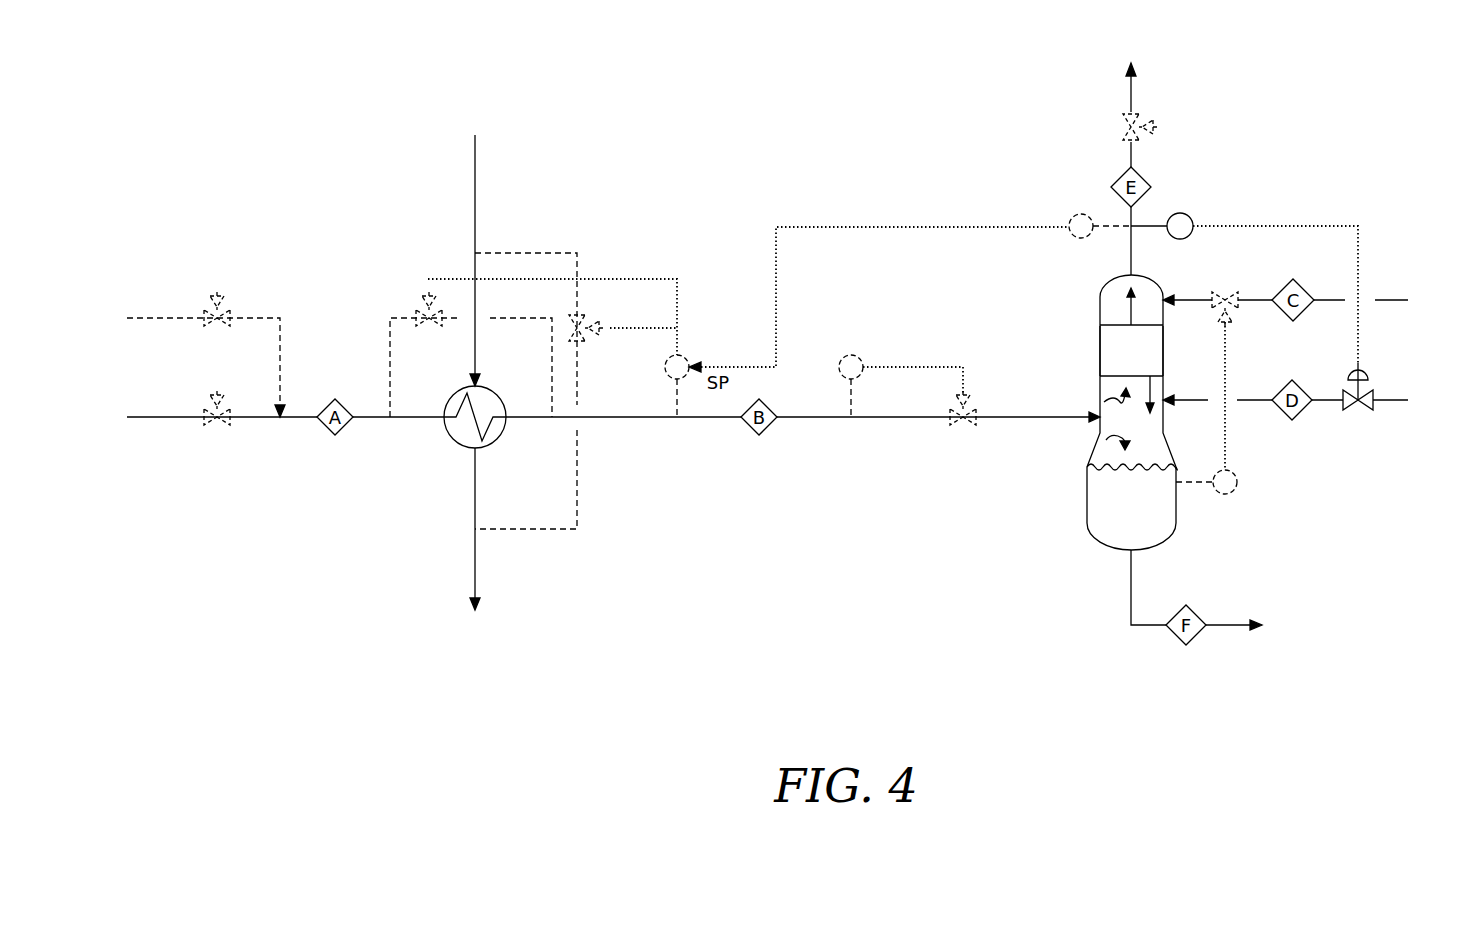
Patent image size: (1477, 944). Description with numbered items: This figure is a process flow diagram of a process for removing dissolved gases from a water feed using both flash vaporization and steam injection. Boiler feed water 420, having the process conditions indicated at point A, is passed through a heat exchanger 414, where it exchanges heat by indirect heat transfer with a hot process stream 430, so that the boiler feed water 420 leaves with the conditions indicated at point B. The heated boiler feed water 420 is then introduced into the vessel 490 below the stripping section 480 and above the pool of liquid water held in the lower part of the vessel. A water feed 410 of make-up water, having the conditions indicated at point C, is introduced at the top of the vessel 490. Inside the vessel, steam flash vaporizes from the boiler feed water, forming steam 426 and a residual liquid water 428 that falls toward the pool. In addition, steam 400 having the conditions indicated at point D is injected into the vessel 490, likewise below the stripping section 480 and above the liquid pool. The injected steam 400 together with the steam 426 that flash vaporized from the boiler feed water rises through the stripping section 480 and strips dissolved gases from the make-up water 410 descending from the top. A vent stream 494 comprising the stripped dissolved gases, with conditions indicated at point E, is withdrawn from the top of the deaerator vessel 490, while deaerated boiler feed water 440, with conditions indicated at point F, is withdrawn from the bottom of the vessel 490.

The steam 400 is at (1385, 400).
The water feed 410 is at (1178, 298).
The heat exchanger 414 is at (452, 437).
The boiler feed water 420 is at (297, 421).
The steam 426 is at (1104, 401).
The residual liquid water 428 is at (1108, 438).
The hot process stream 430 is at (475, 205).
The boiler feed water 440 is at (1131, 610).
The stripping section 480 is at (1125, 357).
The vessel 490 is at (1087, 483).
The vent stream 494 is at (1131, 100).